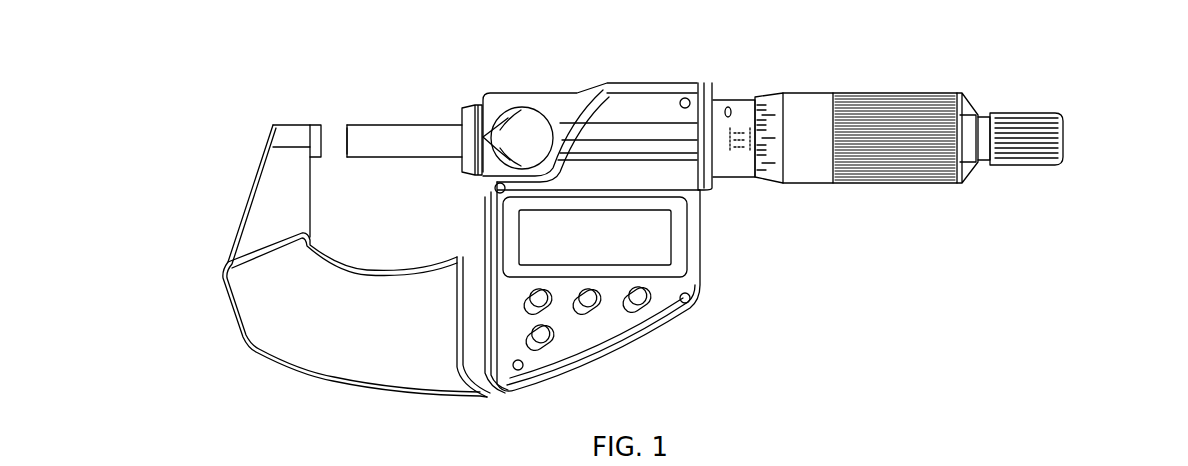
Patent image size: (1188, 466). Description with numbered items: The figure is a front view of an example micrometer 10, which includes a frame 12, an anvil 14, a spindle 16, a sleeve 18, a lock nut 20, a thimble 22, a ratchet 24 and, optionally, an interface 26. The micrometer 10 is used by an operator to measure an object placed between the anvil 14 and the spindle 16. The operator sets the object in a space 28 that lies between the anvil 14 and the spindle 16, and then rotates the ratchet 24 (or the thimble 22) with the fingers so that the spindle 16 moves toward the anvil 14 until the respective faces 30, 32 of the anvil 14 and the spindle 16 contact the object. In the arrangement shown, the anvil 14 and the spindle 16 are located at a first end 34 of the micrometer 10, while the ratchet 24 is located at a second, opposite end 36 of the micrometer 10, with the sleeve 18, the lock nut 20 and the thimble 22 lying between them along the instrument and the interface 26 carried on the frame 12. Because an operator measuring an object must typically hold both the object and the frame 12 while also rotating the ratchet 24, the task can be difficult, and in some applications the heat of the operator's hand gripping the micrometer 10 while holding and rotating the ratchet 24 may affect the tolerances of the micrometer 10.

The micrometer 10 is at (259, 61).
The frame 12 is at (298, 362).
The anvil 14 is at (313, 131).
The spindle 16 is at (422, 125).
The sleeve 18 is at (745, 108).
The lock nut 20 is at (529, 128).
The thimble 22 is at (887, 175).
The ratchet 24 is at (1050, 160).
The interface 26 is at (672, 290).
The space 28 is at (338, 126).
The face 30 is at (320, 135).
The face 32 is at (345, 148).
The first end 34 is at (188, 154).
The second end 36 is at (1150, 165).